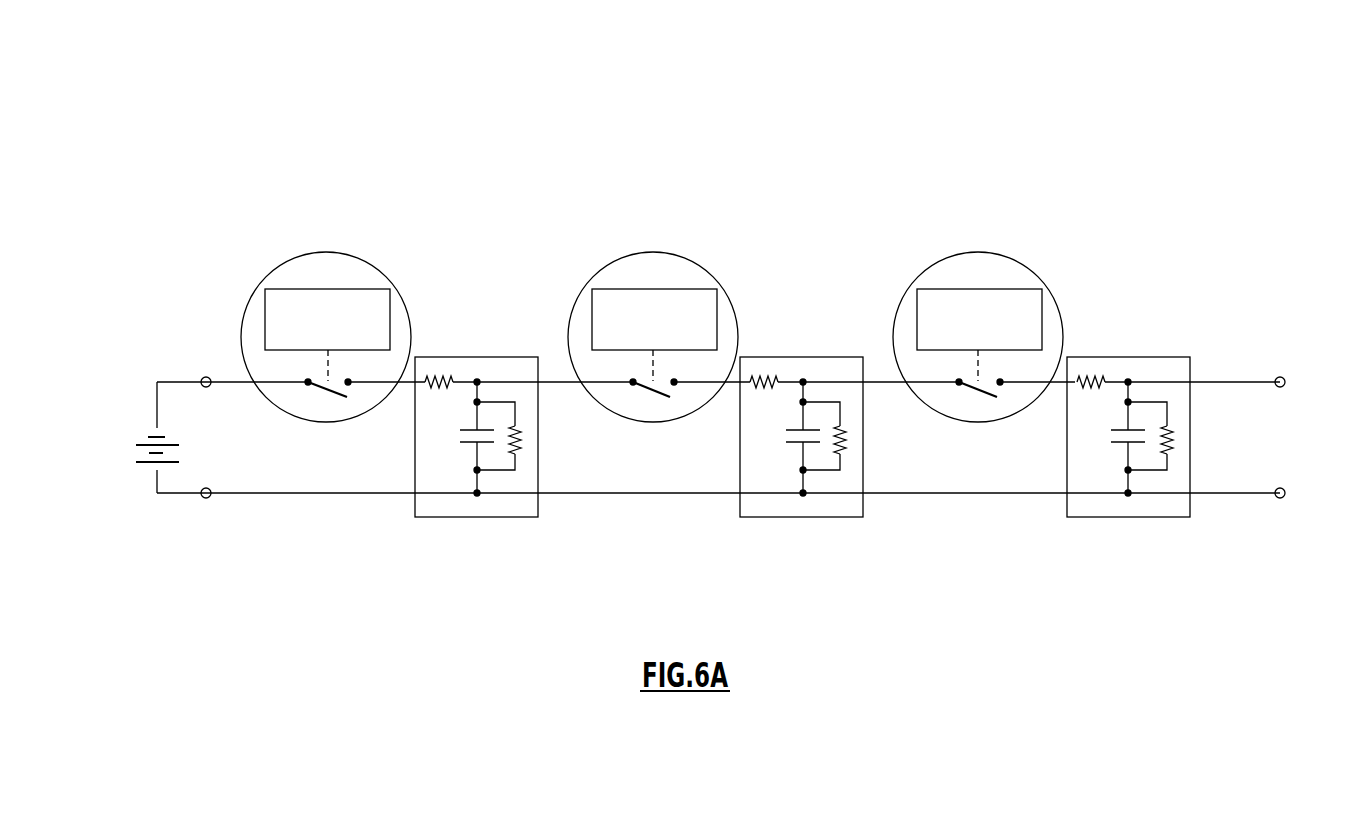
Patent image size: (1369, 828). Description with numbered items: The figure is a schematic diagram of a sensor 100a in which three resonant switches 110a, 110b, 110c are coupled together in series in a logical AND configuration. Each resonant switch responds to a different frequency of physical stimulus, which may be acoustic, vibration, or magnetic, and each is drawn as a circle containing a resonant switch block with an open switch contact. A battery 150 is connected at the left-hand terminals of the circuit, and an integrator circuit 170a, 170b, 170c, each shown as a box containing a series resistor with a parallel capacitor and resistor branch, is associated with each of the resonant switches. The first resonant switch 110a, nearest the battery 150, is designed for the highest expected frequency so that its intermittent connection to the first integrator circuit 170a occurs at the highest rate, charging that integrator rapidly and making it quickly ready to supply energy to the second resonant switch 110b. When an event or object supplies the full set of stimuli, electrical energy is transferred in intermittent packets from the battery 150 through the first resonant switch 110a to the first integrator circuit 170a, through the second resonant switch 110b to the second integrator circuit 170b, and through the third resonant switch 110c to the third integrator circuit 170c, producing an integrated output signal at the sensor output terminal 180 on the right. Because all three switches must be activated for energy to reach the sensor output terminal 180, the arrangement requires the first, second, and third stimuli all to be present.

The sensor 100a is at (1175, 112).
The first resonant switch 110a is at (333, 252).
The second resonant switch 110b is at (658, 252).
The third resonant switch 110c is at (983, 252).
The battery 150 is at (142, 437).
The first integrator circuit 170a is at (458, 517).
The second integrator circuit 170b is at (783, 517).
The third integrator circuit 170c is at (1108, 517).
The sensor output terminal 180 is at (1282, 388).